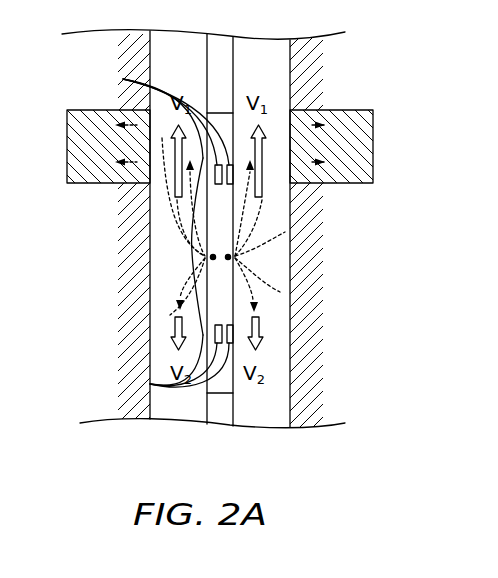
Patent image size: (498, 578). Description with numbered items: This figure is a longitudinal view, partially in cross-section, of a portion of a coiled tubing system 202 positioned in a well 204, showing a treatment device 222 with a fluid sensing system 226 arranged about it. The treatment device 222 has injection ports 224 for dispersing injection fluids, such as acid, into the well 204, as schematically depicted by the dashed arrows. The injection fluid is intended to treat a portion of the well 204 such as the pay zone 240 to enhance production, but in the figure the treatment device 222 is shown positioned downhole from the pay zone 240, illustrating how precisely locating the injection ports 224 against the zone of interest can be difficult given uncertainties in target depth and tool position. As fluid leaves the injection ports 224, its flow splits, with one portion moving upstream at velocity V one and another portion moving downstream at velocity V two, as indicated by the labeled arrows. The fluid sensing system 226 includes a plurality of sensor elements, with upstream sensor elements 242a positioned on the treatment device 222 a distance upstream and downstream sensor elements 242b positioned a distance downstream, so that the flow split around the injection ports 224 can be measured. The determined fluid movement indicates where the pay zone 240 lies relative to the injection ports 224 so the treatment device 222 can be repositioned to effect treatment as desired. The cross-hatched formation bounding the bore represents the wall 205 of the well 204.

The coiled tubing system 202 is at (234, 52).
The well 204 is at (297, 392).
The wall 205 is at (292, 358).
The treatment device 222 is at (234, 222).
The injection ports 224 is at (231, 258).
The fluid sensing system 226 is at (192, 252).
The pay zone 240 is at (372, 142).
The upstream sensor elements 242a is at (123, 79).
The downstream sensor elements 242b is at (150, 384).